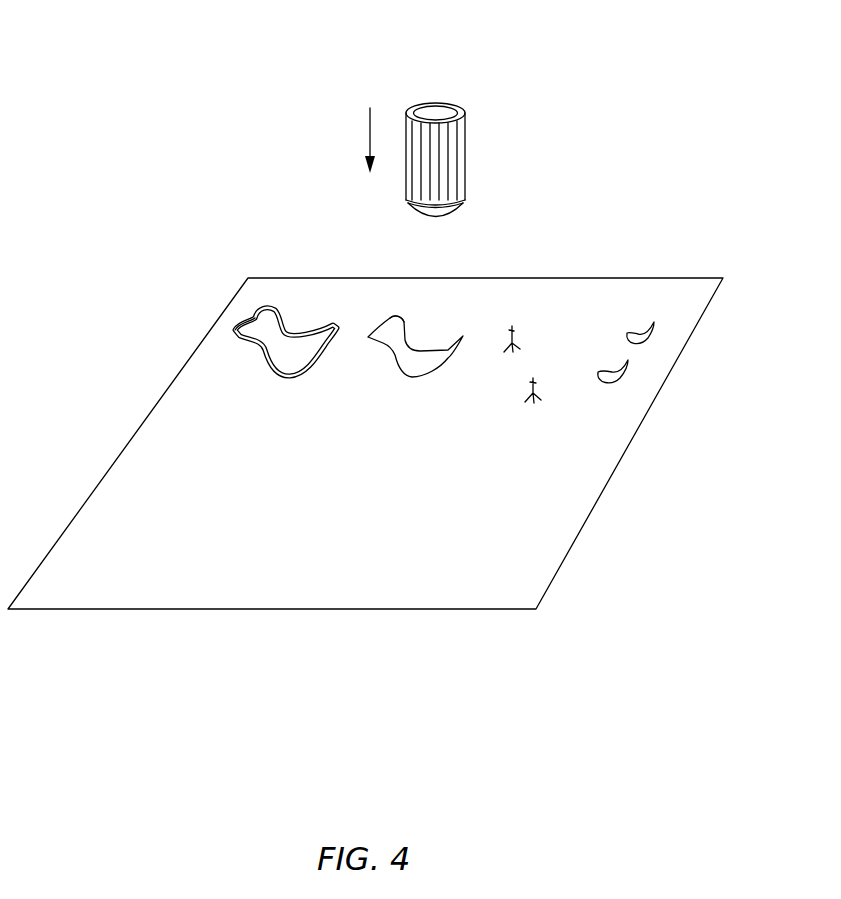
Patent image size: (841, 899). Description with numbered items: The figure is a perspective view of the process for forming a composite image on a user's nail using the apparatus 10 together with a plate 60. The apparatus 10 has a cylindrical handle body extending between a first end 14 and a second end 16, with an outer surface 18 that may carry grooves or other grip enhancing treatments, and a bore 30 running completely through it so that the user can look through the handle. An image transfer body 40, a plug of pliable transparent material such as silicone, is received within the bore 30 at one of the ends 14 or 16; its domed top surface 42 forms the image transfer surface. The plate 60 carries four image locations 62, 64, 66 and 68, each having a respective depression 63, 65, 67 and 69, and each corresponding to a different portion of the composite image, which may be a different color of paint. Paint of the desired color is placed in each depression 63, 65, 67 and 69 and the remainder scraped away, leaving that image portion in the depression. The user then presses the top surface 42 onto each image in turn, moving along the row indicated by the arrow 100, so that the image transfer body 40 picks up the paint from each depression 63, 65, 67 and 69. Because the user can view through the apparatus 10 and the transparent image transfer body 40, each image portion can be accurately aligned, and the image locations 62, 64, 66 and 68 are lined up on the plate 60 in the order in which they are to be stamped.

The apparatus 10 is at (478, 62).
The first end 14 is at (465, 197).
The second end 16 is at (458, 112).
The outer surface 18 is at (455, 142).
The bore 30 is at (433, 97).
The image transfer body 40 is at (410, 200).
The top surface 42 is at (435, 214).
The plate 60 is at (601, 498).
The image location 62 is at (298, 292).
The depression 63 is at (255, 320).
The image location 64 is at (394, 395).
The depression 65 is at (400, 327).
The image location 66 is at (569, 295).
The depression 67 is at (540, 391).
The image location 68 is at (664, 295).
The depression 69 is at (647, 338).
The direction of application 100 is at (368, 133).